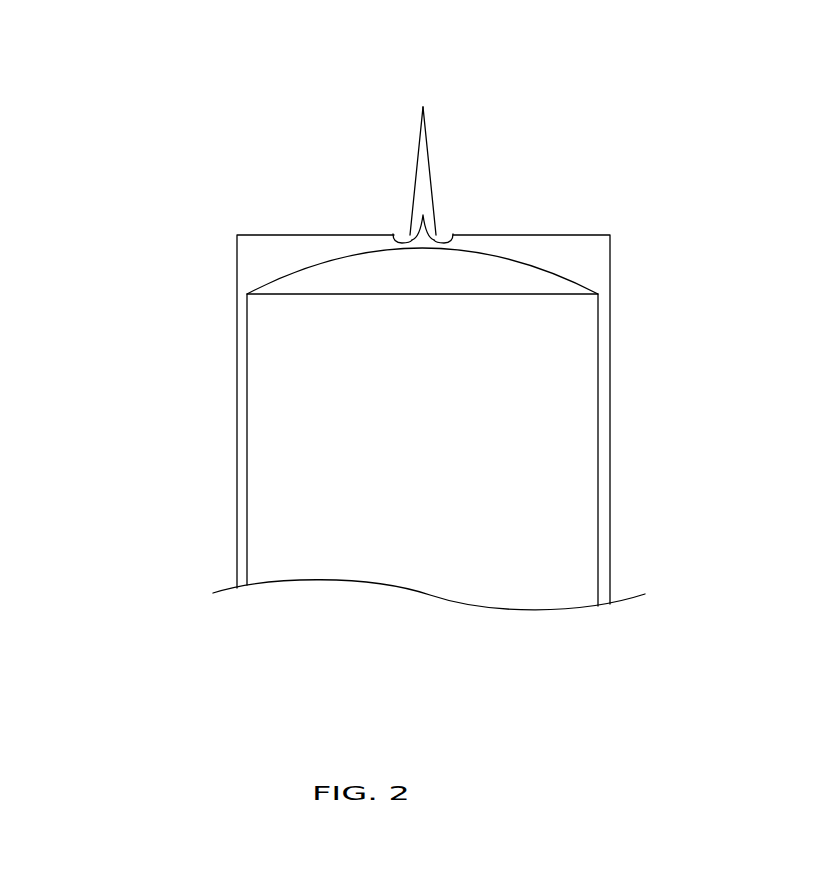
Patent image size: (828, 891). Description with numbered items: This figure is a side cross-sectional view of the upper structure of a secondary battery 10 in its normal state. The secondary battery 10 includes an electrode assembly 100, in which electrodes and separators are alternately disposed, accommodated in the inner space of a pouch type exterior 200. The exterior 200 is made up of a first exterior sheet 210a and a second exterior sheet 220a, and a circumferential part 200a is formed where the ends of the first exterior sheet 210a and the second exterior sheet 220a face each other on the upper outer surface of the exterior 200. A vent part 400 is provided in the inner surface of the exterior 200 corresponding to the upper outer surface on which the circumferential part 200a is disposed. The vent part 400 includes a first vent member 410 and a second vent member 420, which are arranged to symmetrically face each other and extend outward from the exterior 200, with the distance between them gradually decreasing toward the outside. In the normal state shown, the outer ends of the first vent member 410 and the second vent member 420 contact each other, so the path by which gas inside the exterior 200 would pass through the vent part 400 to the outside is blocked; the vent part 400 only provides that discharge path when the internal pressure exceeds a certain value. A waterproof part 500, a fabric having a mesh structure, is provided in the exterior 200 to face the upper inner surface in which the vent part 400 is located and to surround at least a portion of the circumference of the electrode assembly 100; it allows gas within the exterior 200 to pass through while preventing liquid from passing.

The secondary battery 10 is at (491, 85).
The electrode assembly 100 is at (572, 453).
The exterior 200 is at (611, 357).
The circumferential part 200a is at (122, 205).
The first exterior sheet 210a is at (478, 142).
The second exterior sheet 220a is at (419, 138).
The vent part 400 is at (210, 12).
The first vent member 410 is at (483, 192).
The second vent member 420 is at (398, 237).
The waterproof part 500 is at (568, 277).